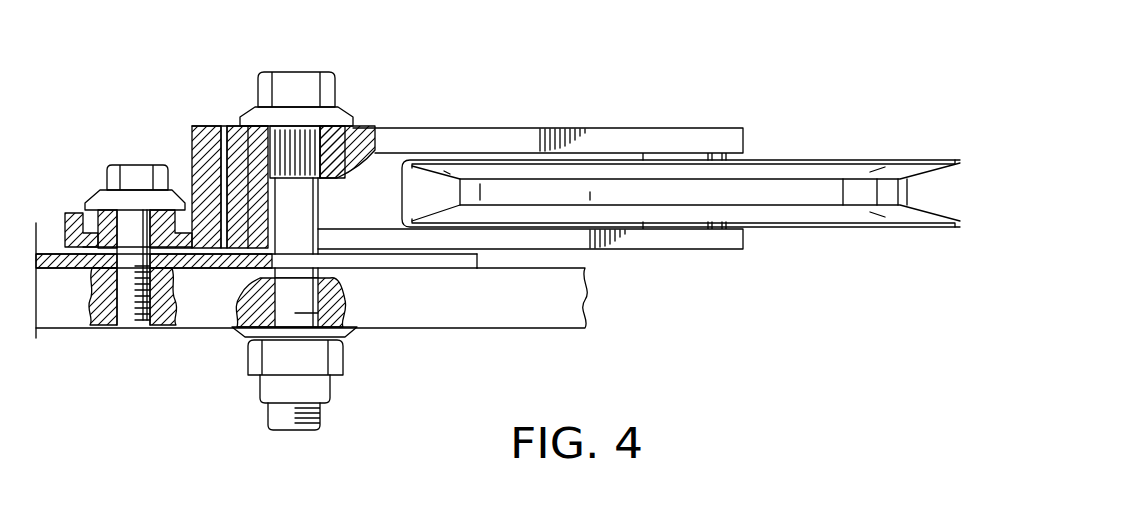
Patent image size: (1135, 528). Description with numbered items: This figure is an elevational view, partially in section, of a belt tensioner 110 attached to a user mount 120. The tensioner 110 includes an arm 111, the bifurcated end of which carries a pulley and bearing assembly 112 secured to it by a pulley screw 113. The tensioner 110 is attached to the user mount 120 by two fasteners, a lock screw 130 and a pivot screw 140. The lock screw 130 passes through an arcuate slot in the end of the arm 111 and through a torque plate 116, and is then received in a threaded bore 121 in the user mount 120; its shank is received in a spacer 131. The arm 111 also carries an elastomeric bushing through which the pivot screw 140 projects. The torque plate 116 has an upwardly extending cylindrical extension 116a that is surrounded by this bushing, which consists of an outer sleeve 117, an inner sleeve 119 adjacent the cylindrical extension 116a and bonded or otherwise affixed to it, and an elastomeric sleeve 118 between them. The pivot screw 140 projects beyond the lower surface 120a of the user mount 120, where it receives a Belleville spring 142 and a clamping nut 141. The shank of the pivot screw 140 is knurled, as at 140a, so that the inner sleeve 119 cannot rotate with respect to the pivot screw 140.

The tensioner 110 is at (463, 86).
The arm 111 is at (503, 138).
The pulley and bearing assembly 112 is at (785, 162).
The pulley screw 113 is at (672, 158).
The torque plate 116 is at (202, 264).
The cylindrical extension 116a is at (290, 235).
The outer sleeve 117 is at (221, 126).
The elastomeric sleeve 118 is at (237, 126).
The inner sleeve 119 is at (333, 173).
The user mount 120 is at (548, 322).
The lower surface 120a is at (477, 330).
The threaded bore 121 is at (132, 328).
The lock screw 130 is at (137, 163).
The spacer 131 is at (110, 218).
The pivot screw 140 is at (305, 72).
The knurled shank portion 140a is at (296, 143).
The clamping nut 141 is at (335, 360).
The Belleville spring 142 is at (343, 334).